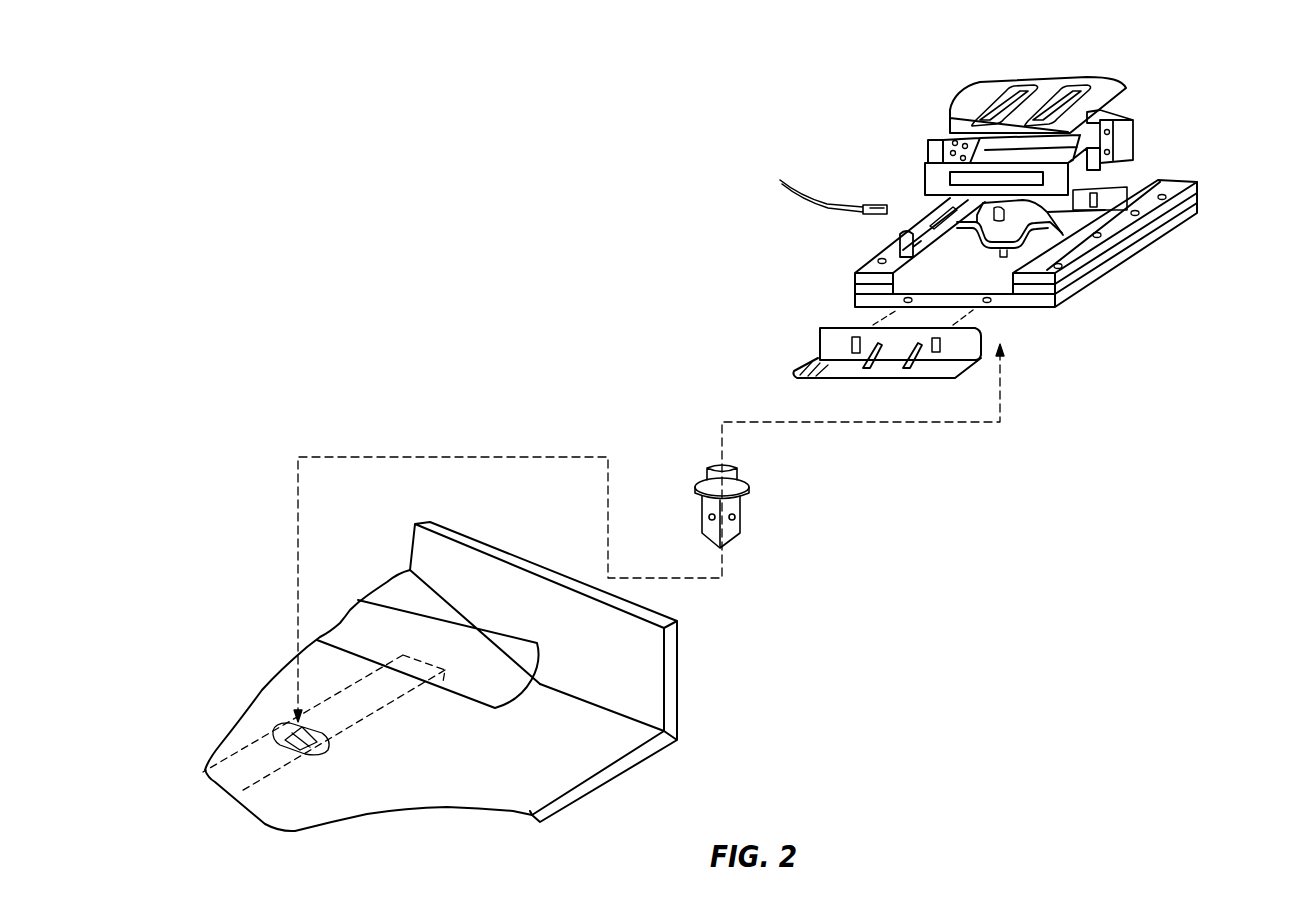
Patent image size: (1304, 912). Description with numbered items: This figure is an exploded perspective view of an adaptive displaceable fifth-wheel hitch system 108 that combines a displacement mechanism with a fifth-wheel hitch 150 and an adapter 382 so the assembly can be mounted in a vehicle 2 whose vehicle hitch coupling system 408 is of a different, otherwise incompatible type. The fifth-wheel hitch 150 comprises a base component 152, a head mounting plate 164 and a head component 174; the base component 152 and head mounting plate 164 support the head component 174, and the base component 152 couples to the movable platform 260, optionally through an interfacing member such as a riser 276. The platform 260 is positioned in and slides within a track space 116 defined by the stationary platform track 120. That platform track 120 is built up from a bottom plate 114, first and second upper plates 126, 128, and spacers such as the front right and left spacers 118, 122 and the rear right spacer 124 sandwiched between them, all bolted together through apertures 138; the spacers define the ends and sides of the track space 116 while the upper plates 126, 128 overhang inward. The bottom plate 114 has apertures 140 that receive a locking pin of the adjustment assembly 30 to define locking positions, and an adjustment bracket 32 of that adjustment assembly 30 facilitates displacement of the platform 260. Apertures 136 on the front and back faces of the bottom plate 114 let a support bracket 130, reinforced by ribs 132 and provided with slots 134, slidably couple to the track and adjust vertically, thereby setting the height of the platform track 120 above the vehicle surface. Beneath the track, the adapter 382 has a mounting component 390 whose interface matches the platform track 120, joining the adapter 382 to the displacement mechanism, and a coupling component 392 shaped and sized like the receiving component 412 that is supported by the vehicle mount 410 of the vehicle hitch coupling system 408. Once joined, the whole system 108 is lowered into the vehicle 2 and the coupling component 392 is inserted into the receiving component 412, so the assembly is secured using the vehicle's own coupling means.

The vehicle 2 is at (627, 680).
The adjustment assembly 30 is at (849, 196).
The adjustment bracket 32 is at (913, 220).
The adaptive displaceable fifth-wheel hitch system 108 is at (495, 184).
The bottom plate 114 is at (1184, 216).
The track space 116 is at (926, 263).
The front right spacer 118 is at (1033, 290).
The platform track 120 is at (1208, 191).
The front left spacer 122 is at (1120, 252).
The rear right spacer 124 is at (1199, 199).
The first upper plate 126 is at (1047, 267).
The second upper plate 128 is at (877, 263).
The support bracket 130 is at (1033, 386).
The ribs 132 is at (917, 362).
The slots 134 is at (850, 351).
The apertures 136 is at (989, 304).
The apertures 138 is at (1060, 236).
The apertures 140 is at (1158, 170).
The fifth-wheel hitch 150 is at (1143, 73).
The base component 152 is at (935, 170).
The head mounting plate 164 is at (1137, 124).
The head component 174 is at (977, 97).
The platform 260 is at (1093, 243).
The riser 276 is at (898, 237).
The adapter 382 is at (752, 493).
The mounting component 390 is at (730, 470).
The coupling component 392 is at (733, 535).
The vehicle hitch coupling system 408 is at (340, 731).
The vehicle mount 410 is at (237, 778).
The receiving component 412 is at (303, 743).